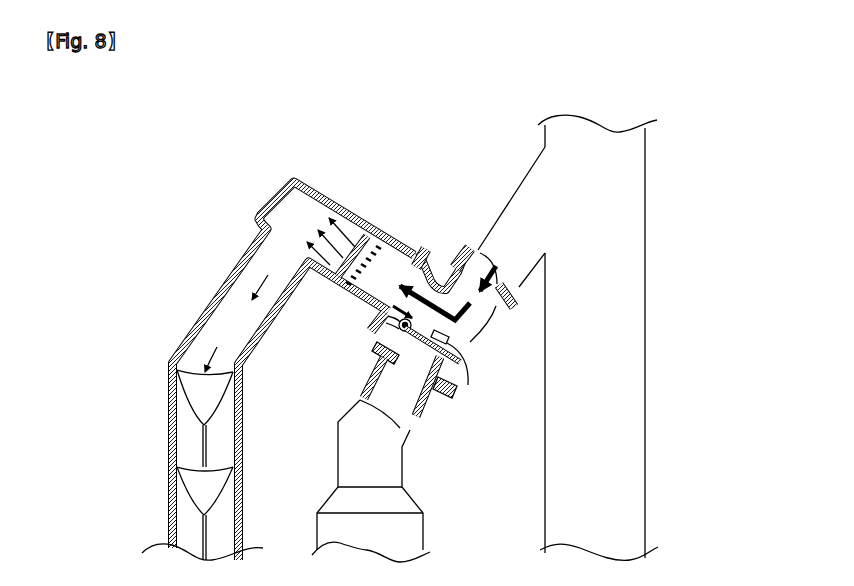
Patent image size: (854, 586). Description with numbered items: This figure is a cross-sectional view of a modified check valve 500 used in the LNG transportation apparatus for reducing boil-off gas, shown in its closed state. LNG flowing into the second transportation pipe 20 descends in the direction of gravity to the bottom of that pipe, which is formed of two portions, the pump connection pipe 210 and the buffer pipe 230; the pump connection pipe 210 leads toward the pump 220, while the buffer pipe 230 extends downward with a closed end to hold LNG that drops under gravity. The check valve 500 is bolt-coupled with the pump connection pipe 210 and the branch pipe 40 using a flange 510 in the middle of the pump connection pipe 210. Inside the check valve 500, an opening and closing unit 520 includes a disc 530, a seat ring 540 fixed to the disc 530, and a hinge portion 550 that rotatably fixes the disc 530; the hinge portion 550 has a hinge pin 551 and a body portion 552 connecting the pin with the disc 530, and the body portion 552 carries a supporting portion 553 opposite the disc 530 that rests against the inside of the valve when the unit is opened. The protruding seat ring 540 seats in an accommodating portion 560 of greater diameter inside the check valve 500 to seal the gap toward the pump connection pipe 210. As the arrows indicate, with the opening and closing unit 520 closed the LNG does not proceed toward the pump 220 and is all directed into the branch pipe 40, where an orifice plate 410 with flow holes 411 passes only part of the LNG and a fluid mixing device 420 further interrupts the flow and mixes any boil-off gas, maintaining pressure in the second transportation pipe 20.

The second transportation pipe 20 is at (707, 308).
The branch pipe 40 is at (255, 250).
The pump connection pipe 210 is at (388, 457).
The pump 220 is at (407, 528).
The buffer pipe 230 is at (627, 437).
The orifice plate 410 is at (350, 236).
The flow hole 411 is at (366, 244).
The fluid mixing device 420 is at (188, 398).
The check valve 500 is at (437, 272).
The flange 510 is at (446, 252).
The opening and closing unit 520 is at (370, 315).
The disc 530 is at (462, 358).
The seat ring 540 is at (448, 400).
The hinge portion 550 is at (325, 358).
The hinge pin 551 is at (390, 345).
The body portion 552 is at (380, 373).
The supporting portion 553 is at (462, 344).
The accommodating portion 560 is at (456, 380).